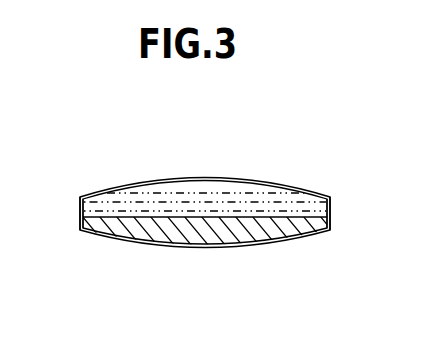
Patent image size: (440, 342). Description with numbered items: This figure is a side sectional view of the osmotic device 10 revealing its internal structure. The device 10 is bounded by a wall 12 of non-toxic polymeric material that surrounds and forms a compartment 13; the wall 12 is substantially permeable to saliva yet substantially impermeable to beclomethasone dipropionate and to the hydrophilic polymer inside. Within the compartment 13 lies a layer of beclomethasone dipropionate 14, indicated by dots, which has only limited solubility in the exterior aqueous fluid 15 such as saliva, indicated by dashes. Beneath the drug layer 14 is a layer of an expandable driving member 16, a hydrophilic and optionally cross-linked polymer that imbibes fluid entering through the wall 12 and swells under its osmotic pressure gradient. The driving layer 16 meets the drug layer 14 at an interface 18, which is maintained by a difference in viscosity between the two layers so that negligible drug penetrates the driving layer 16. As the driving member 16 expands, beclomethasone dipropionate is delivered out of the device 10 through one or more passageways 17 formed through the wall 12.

The osmotic device 10 is at (122, 258).
The wall 12 is at (87, 193).
The compartment 13 is at (117, 192).
The layer of beclomethasone dipropionate 14 is at (303, 190).
The exterior aqueous fluid 15 is at (268, 197).
The expandable driving member 16 is at (193, 233).
The passageway 17 is at (250, 175).
The interface 18 is at (257, 235).